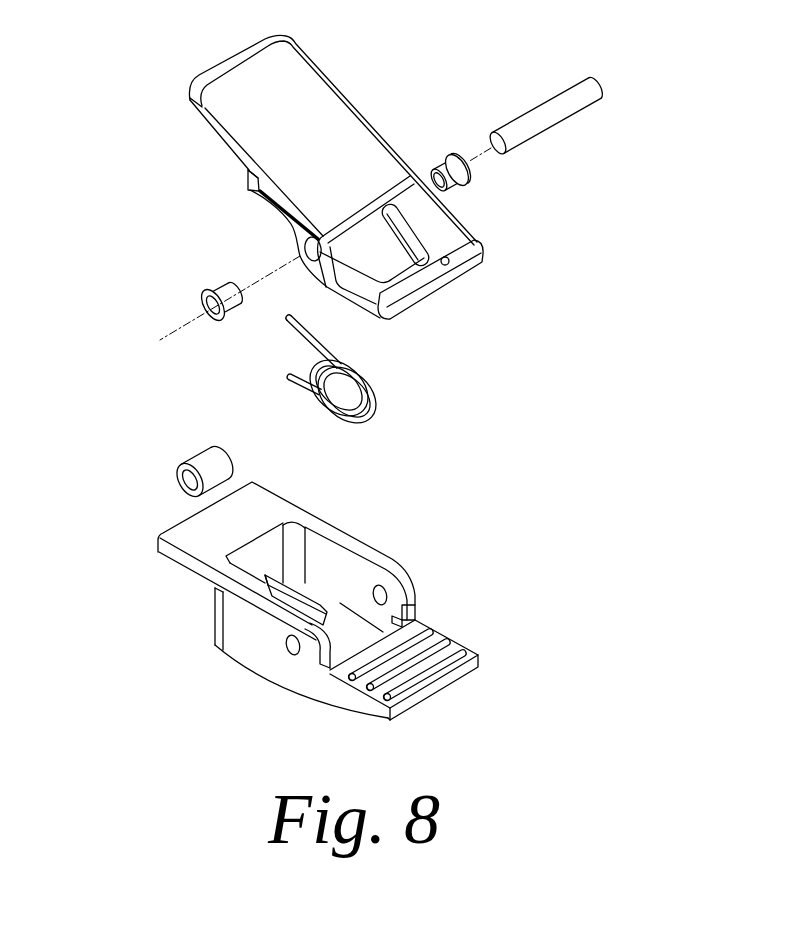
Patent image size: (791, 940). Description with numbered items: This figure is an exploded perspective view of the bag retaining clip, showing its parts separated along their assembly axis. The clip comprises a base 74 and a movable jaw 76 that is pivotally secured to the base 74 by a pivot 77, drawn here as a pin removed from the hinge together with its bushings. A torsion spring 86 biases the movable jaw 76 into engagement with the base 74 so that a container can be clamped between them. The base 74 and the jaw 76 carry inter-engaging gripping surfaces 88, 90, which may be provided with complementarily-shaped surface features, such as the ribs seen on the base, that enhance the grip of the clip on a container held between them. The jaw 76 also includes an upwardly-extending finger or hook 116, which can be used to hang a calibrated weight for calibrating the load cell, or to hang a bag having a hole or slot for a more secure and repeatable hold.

The base 74 is at (252, 660).
The movable jaw 76 is at (317, 89).
The pivot 77 is at (572, 104).
The torsion spring 86 is at (372, 397).
The gripping surface 88 is at (430, 673).
The gripping surface 90 is at (458, 273).
The hook 116 is at (413, 233).